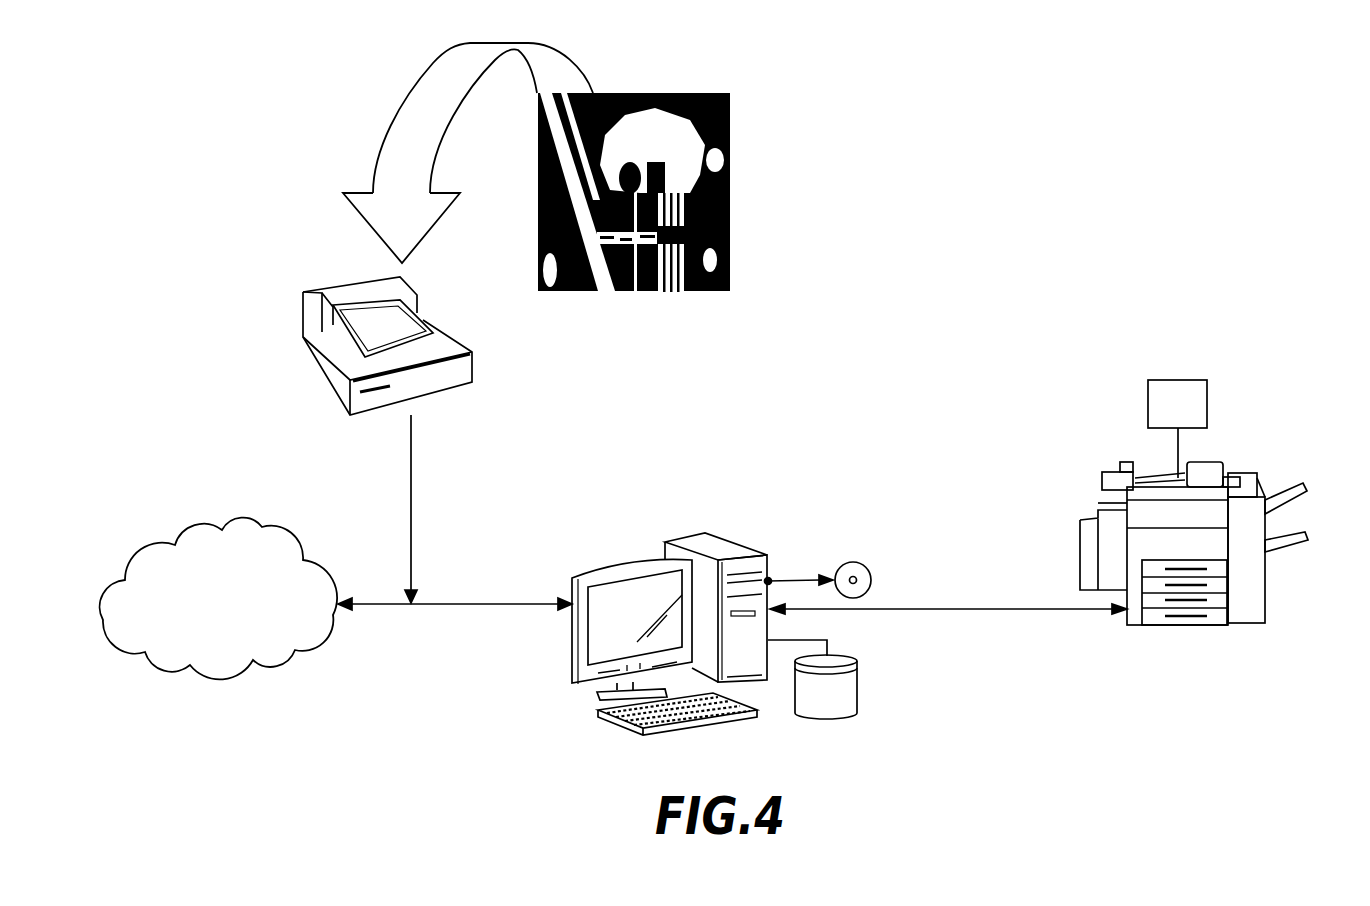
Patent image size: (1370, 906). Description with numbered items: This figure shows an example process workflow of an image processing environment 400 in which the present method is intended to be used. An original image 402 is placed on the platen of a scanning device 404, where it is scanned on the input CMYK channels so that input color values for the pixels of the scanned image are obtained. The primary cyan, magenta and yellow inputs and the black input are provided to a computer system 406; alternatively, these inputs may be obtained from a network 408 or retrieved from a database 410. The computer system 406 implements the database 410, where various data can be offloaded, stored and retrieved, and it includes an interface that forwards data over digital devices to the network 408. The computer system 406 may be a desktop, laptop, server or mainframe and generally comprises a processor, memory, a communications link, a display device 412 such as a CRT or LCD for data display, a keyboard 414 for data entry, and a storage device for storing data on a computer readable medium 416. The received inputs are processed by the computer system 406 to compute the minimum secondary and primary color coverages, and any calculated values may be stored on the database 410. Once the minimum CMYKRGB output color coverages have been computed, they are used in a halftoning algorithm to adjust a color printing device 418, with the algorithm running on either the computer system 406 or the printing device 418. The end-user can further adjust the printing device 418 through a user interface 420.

The image processing environment 400 is at (305, 63).
The original image 402 is at (727, 132).
The scanning device 404 is at (310, 276).
The computer system 406 is at (651, 626).
The network 408 is at (243, 523).
The database 410 is at (840, 715).
The display device 412 is at (603, 628).
The keyboard 414 is at (712, 718).
The computer readable medium 416 is at (873, 575).
The color printing device 418 is at (1259, 441).
The user interface 420 is at (1183, 378).